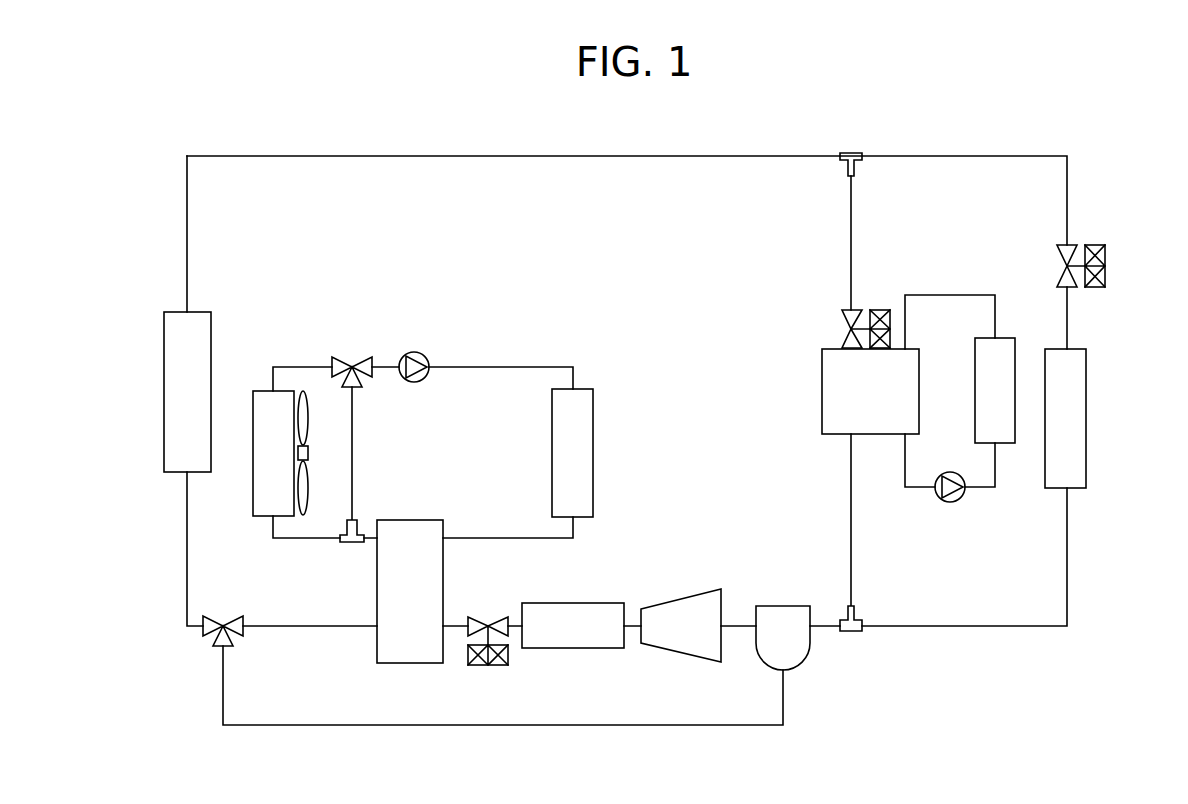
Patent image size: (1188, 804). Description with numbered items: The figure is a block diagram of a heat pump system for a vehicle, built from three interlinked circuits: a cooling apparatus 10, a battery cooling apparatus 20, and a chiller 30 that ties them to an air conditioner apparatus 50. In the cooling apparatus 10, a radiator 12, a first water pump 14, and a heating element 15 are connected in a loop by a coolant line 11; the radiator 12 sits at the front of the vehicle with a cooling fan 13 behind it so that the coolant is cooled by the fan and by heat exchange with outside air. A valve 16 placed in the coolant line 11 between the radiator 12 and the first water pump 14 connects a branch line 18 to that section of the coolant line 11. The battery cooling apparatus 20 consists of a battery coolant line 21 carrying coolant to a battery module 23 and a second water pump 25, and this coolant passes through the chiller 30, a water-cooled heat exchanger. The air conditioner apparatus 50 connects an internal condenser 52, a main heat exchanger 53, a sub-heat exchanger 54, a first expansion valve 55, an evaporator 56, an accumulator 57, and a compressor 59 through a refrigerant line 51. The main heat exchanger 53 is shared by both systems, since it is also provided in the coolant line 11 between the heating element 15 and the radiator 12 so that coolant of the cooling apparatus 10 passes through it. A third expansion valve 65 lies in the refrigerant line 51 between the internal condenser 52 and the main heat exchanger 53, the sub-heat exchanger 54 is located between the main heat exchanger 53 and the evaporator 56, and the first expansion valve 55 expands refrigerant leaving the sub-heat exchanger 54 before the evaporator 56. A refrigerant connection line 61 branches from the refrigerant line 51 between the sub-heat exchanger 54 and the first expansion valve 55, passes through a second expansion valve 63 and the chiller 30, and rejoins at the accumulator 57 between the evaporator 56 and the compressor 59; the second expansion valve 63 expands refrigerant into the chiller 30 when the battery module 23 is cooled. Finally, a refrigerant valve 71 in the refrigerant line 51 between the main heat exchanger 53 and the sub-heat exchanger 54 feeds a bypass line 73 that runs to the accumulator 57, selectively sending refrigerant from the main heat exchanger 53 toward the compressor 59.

The cooling apparatus 10 is at (551, 364).
The coolant line 11 is at (303, 365).
The radiator 12 is at (263, 388).
The cooling fan 13 is at (309, 419).
The first water pump 14 is at (413, 352).
The heating element 15 is at (595, 453).
The valve 16 is at (350, 356).
The branch line 18 is at (354, 456).
The battery cooling apparatus 20 is at (983, 294).
The battery coolant line 21 is at (945, 294).
The battery module 23 is at (1000, 445).
The second water pump 25 is at (950, 503).
The chiller 30 is at (821, 391).
The air conditioner apparatus 50 is at (1066, 157).
The refrigerant line 51 is at (503, 155).
The internal condenser 52 is at (572, 602).
The main heat exchanger 53 is at (376, 579).
The sub-heat exchanger 54 is at (163, 393).
The first expansion valve 55 is at (1106, 267).
The evaporator 56 is at (1087, 418).
The accumulator 57 is at (783, 605).
The compressor 59 is at (680, 595).
The refrigerant connection line 61 is at (850, 244).
The second expansion valve 63 is at (841, 320).
The third expansion valve 65 is at (489, 667).
The refrigerant valve 71 is at (204, 636).
The bypass line 73 is at (503, 727).